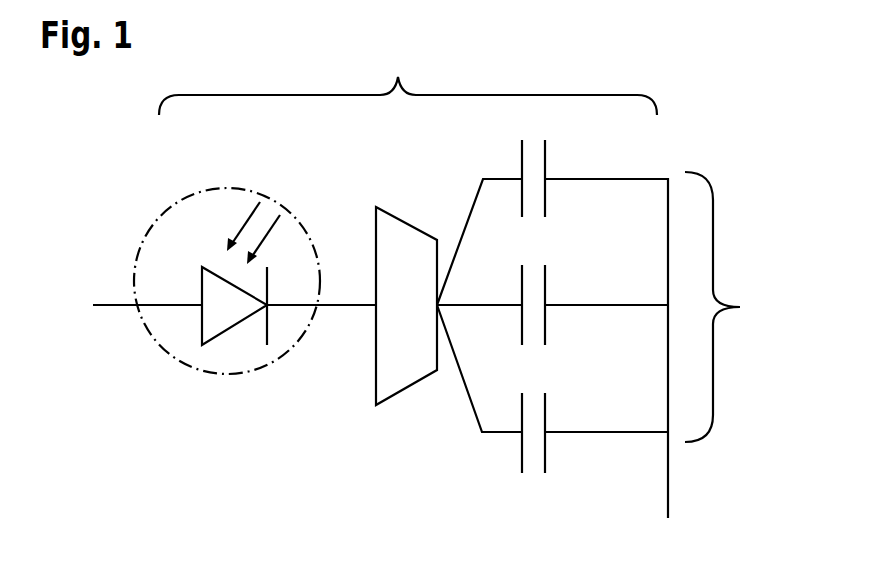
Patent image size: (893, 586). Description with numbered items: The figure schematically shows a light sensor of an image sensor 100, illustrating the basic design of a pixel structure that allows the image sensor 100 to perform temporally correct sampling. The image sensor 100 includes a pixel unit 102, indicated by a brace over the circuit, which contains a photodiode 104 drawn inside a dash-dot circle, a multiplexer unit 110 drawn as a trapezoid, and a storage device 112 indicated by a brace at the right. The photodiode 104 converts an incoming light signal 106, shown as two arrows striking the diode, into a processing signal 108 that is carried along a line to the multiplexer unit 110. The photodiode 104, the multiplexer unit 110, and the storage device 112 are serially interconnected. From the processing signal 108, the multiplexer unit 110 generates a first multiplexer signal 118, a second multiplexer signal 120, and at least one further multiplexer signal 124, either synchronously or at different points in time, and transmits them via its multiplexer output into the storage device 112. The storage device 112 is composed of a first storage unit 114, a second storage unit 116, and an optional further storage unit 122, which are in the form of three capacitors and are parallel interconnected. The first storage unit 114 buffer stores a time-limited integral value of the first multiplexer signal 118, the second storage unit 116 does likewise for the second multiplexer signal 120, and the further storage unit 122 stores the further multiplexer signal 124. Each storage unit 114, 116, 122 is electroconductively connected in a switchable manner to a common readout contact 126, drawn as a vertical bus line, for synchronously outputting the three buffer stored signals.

The image sensor 100 is at (118, 184).
The pixel unit 102 is at (408, 77).
The photodiode 104 is at (137, 258).
The light signal 106 is at (243, 222).
The processing signal 108 is at (347, 305).
The multiplexer unit 110 is at (408, 224).
The storage device 112 is at (736, 307).
The first storage unit 114 is at (548, 158).
The second storage unit 116 is at (548, 285).
The first multiplexer signal 118 is at (469, 215).
The second multiplexer signal 120 is at (502, 307).
The further storage unit 122 is at (548, 458).
The further multiplexer signal 124 is at (468, 397).
The readout contact 126 is at (668, 501).